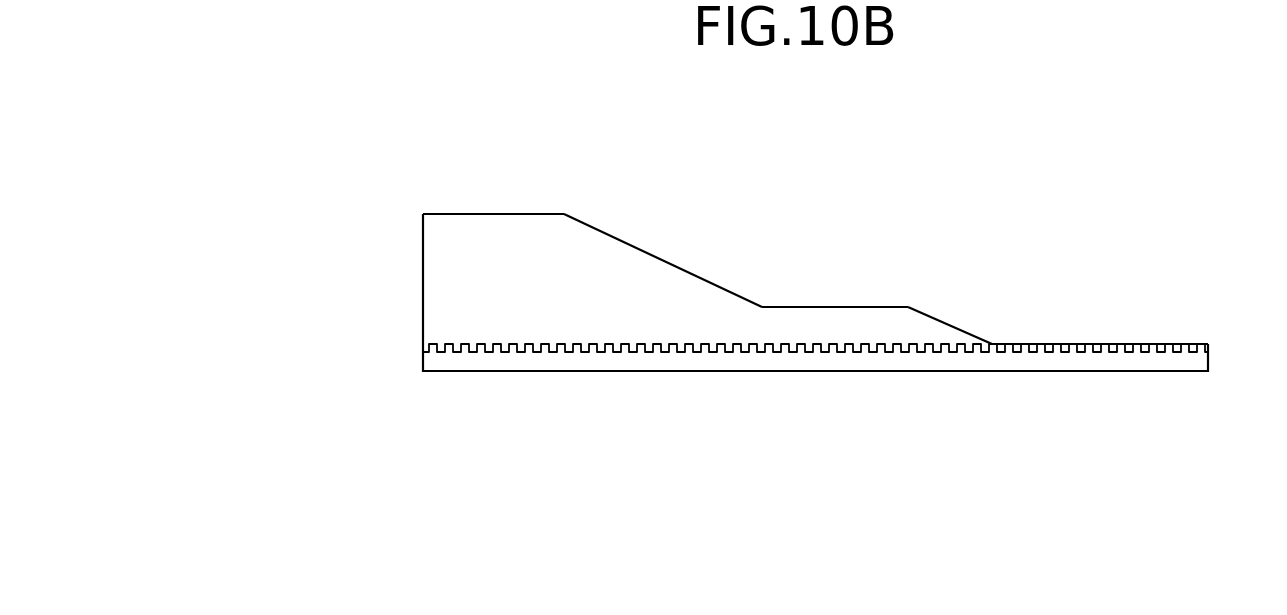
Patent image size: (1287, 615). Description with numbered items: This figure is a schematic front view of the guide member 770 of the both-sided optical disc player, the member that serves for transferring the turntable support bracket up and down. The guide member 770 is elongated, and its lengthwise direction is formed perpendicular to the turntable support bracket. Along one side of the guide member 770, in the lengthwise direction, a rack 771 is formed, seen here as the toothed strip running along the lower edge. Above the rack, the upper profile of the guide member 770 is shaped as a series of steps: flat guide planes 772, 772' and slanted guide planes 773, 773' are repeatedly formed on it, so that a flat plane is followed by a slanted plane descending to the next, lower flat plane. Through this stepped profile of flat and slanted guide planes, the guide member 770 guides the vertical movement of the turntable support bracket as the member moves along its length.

The guide member 770 is at (476, 202).
The rack 771 is at (1192, 363).
The flat guide plane 772 is at (815, 318).
The flat guide plane 772' is at (835, 266).
The slanted guide plane 773 is at (960, 299).
The slanted guide plane 773' is at (663, 248).